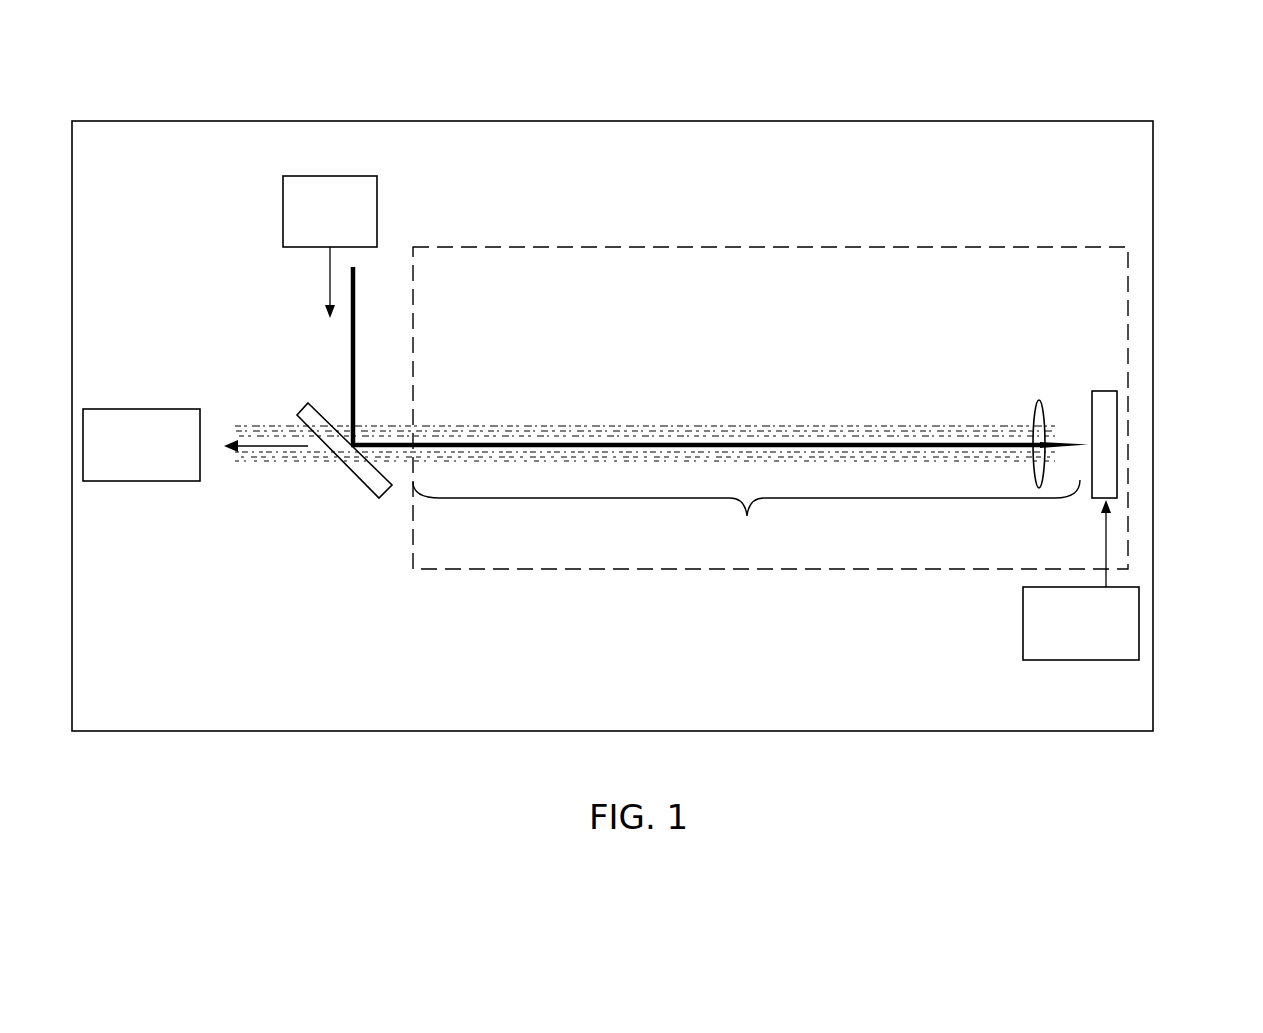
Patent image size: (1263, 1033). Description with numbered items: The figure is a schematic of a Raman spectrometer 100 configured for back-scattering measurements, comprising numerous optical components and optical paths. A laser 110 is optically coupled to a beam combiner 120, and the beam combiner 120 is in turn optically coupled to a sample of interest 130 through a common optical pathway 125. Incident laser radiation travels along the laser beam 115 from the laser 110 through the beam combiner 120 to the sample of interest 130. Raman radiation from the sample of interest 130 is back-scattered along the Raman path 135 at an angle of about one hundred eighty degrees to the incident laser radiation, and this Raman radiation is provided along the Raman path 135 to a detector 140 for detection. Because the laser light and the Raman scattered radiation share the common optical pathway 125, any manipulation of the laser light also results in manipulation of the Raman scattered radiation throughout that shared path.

The spectrometer 100 is at (556, 92).
The laser 110 is at (283, 217).
The laser beam 115 is at (384, 342).
The beam combiner 120 is at (307, 421).
The common optical pathway 125 is at (770, 408).
The sample of interest 130 is at (1127, 613).
The Raman path 135 is at (946, 414).
The detector 140 is at (130, 468).